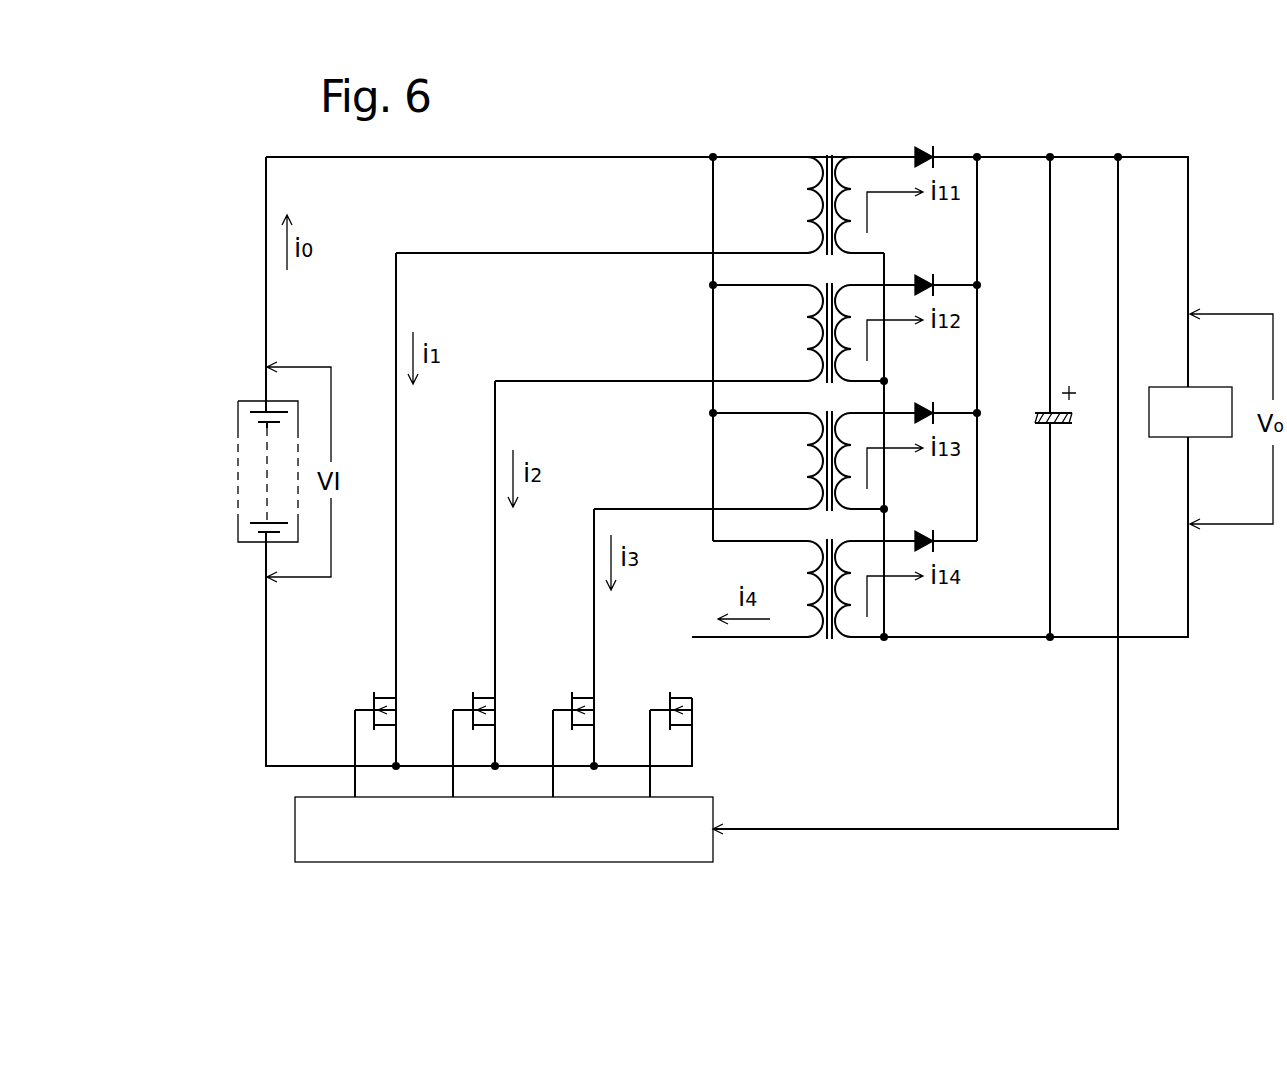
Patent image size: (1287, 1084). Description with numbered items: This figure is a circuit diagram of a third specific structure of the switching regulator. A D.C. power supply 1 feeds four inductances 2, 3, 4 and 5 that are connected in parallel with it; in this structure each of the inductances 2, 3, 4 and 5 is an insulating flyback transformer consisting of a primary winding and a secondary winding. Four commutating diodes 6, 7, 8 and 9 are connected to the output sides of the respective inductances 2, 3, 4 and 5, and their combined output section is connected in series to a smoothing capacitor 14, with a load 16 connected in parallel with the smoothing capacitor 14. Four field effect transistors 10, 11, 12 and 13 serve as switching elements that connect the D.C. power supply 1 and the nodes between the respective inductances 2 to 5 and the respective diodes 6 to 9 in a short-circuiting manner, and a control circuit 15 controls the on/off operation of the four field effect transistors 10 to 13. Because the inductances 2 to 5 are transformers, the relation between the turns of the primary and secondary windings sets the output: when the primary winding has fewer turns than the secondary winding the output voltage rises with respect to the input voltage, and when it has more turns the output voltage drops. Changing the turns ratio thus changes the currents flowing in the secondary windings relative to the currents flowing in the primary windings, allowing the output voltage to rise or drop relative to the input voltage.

The D.C. power supply 1 is at (238, 517).
The inductance 2 is at (826, 137).
The inductance 3 is at (809, 264).
The inductance 4 is at (809, 392).
The inductance 5 is at (809, 519).
The commutating diode 6 is at (920, 150).
The commutating diode 7 is at (921, 278).
The commutating diode 8 is at (921, 406).
The commutating diode 9 is at (921, 534).
The field effect transistor 10 is at (373, 700).
The field effect transistor 11 is at (472, 700).
The field effect transistor 12 is at (571, 700).
The field effect transistor 13 is at (668, 700).
The smoothing capacitor 14 is at (1042, 426).
The control circuit 15 is at (713, 847).
The load 16 is at (1180, 437).